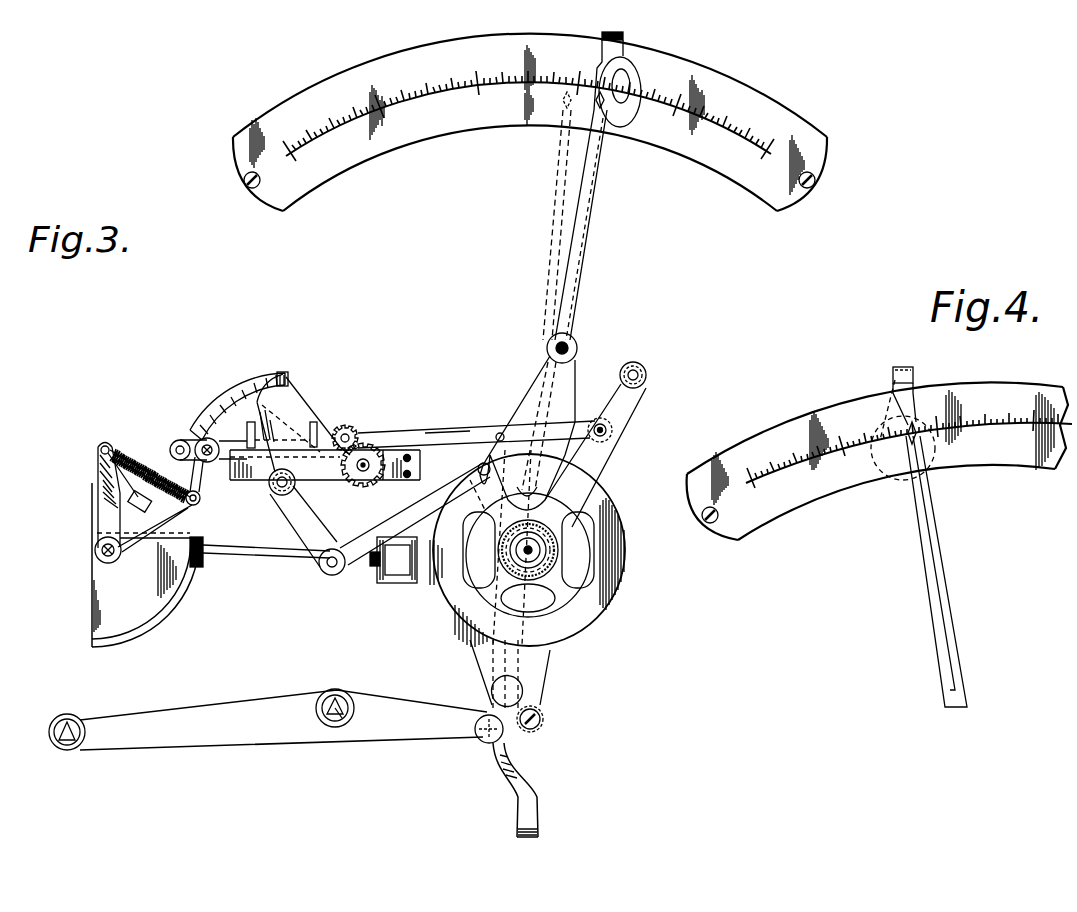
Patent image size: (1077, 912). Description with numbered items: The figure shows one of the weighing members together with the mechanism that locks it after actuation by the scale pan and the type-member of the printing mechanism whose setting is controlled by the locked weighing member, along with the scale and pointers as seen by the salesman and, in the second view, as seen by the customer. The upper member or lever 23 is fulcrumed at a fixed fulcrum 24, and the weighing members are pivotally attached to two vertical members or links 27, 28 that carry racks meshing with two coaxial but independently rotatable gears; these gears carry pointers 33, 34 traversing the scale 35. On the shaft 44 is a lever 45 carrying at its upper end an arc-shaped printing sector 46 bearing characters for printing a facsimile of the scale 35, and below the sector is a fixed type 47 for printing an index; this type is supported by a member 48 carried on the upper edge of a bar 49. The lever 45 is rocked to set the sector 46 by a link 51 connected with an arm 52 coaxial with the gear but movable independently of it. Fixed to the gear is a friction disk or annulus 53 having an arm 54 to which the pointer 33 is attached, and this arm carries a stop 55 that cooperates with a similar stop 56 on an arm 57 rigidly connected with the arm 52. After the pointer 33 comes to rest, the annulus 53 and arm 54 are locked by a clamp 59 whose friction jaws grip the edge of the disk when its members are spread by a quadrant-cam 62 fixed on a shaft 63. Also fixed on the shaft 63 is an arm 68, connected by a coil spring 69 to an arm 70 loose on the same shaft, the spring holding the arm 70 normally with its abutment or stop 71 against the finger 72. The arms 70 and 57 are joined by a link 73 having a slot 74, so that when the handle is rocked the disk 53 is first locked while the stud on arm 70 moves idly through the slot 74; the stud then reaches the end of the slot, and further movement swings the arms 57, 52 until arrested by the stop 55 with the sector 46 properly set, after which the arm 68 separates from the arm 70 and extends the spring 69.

In FIG. 3, the upper member or lever 23 is at (268, 720).
In FIG. 3, the fulcrum 24 is at (345, 733).
In FIG. 3, the vertical member or link 27 is at (527, 790).
In FIG. 3, the vertical member or link 28 is at (538, 700).
In FIG. 3, the pointer 33 is at (585, 250).
In FIG. 4, the pointer 33 is at (935, 512).
In FIG. 3, the pointer 34 is at (577, 305).
In FIG. 4, the pointer 34 is at (935, 587).
In FIG. 3, the scale 35 is at (530, 122).
In FIG. 4, the scale 35 is at (879, 457).
In FIG. 3, the shaft 44 is at (277, 488).
In FIG. 3, the lever 45 is at (310, 533).
In FIG. 3, the arc-shaped member or printing sector 46 is at (268, 378).
In FIG. 3, the fixed character or type 47 is at (290, 392).
In FIG. 3, the member 48 is at (292, 413).
In FIG. 3, the bar 49 is at (445, 432).
In FIG. 3, the link 51 is at (338, 573).
In FIG. 3, the arm 52 is at (500, 434).
In FIG. 3, the friction disk or annulus 53 is at (605, 598).
In FIG. 3, the arm 54 is at (540, 388).
In FIG. 3, the stop 55 is at (552, 346).
In FIG. 3, the stop 56 is at (650, 375).
In FIG. 3, the arm 57 is at (627, 410).
In FIG. 3, the clamp 59 is at (283, 551).
In FIG. 3, the quadrant-cam 62 is at (185, 600).
In FIG. 3, the shaft 63 is at (95, 552).
In FIG. 3, the arm 68 is at (103, 483).
In FIG. 3, the coil spring 69 is at (143, 437).
In FIG. 3, the arm 70 is at (197, 469).
In FIG. 3, the abutment or stop 71 is at (168, 516).
In FIG. 3, the finger 72 is at (128, 499).
In FIG. 3, the link 73 is at (395, 437).
In FIG. 3, the slot 74 is at (178, 440).